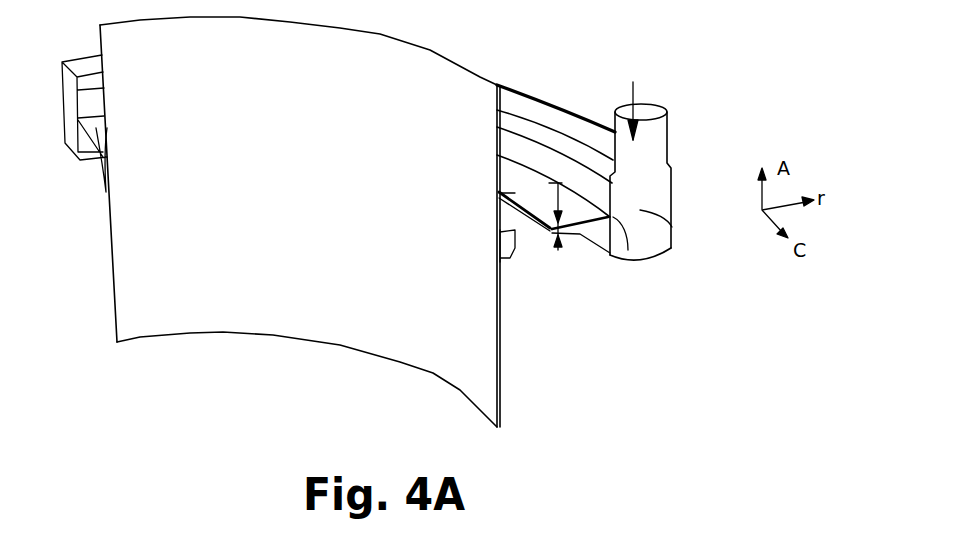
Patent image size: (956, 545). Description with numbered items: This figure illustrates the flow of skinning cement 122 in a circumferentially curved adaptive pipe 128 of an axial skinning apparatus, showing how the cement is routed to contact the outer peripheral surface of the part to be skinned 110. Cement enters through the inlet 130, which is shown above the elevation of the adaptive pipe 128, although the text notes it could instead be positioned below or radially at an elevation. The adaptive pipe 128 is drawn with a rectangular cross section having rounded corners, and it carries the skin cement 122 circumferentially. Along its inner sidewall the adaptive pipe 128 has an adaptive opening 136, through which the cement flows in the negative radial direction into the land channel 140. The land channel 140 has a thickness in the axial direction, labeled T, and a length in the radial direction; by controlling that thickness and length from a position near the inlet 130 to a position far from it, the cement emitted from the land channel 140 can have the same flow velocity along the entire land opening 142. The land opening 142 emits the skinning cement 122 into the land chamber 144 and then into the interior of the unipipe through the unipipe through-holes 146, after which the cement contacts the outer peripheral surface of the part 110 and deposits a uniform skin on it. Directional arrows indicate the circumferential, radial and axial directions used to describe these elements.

The part to be skinned 110 is at (462, 380).
The skinning cement 122 is at (499, 295).
The adaptive pipe 128 is at (670, 193).
The inlet 130 is at (633, 92).
The adaptive opening 136 is at (628, 250).
The land channel 140 is at (550, 229).
The land opening 142 is at (513, 262).
The land chamber 144 is at (517, 205).
The unipipe through-holes 146 is at (507, 220).